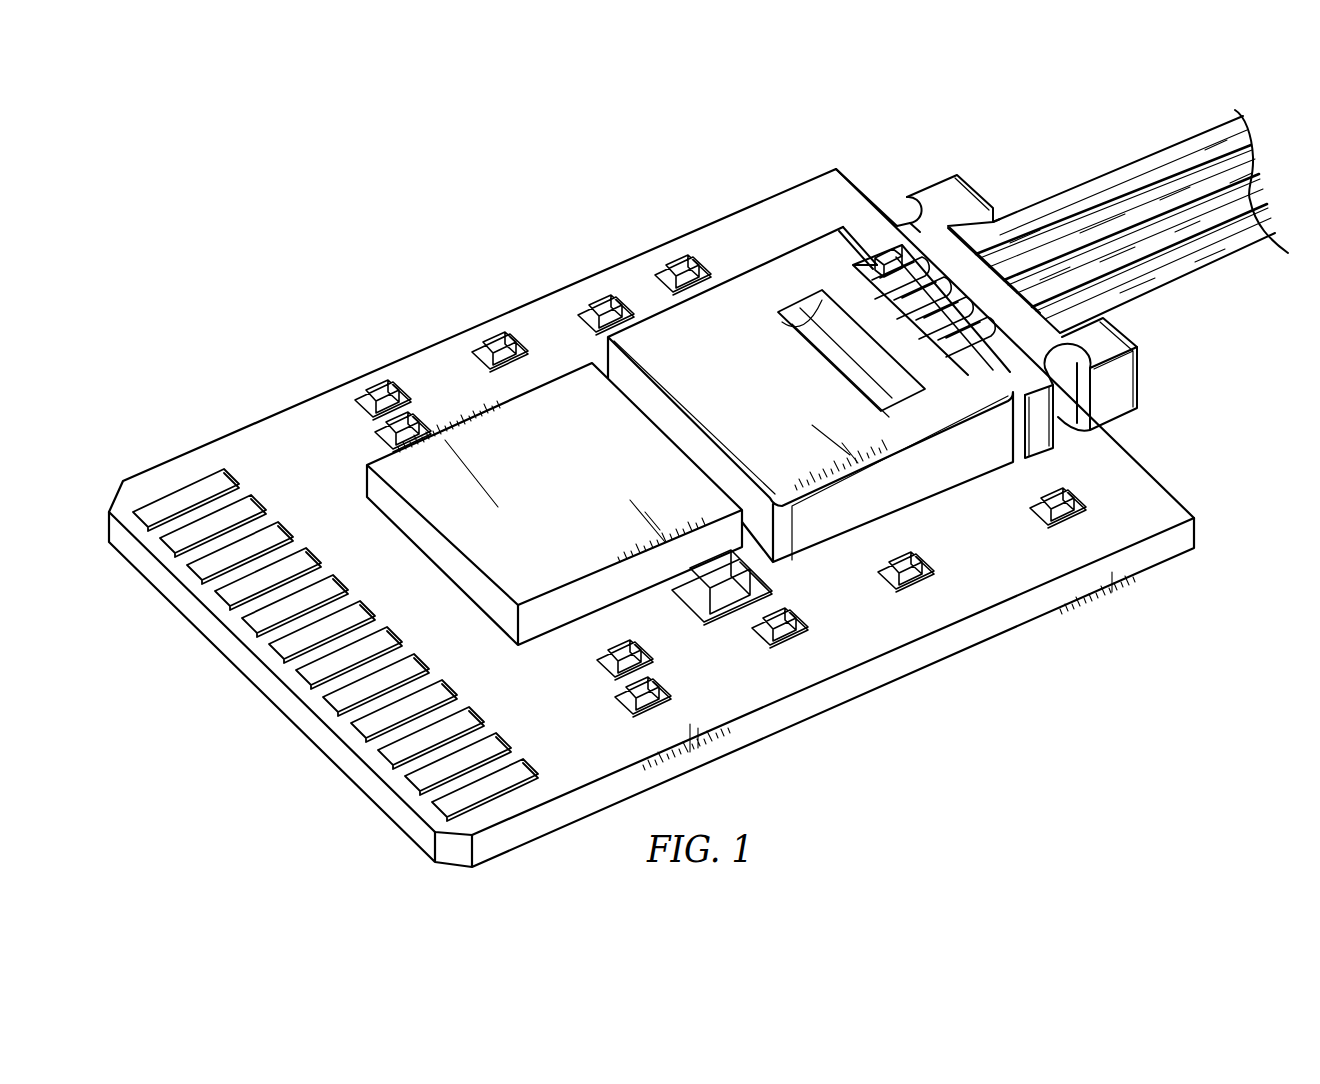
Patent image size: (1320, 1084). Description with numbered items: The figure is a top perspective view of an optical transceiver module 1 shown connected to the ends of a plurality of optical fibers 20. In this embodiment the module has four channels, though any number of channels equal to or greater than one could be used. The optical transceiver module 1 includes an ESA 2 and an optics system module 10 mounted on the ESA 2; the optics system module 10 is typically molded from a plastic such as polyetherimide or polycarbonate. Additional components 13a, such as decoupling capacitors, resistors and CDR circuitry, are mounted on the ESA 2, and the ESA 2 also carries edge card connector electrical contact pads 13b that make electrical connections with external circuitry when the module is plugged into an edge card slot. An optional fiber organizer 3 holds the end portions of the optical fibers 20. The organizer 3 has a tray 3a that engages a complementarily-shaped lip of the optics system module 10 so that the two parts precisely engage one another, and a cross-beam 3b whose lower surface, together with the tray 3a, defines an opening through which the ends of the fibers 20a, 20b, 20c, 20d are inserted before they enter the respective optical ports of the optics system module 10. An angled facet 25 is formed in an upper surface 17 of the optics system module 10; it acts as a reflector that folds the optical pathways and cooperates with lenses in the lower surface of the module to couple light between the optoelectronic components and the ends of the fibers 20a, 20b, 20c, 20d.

The optical transceiver module 1 is at (596, 135).
The ESA 2 is at (925, 655).
The fiber organizer 3 is at (950, 195).
The tray 3a is at (891, 276).
The cross-beam 3b is at (905, 222).
The optics system module 10 is at (665, 330).
The additional components 13a is at (672, 262).
The edge card connector electrical contact pads 13b is at (228, 594).
The upper surface 17 is at (872, 440).
The optical fibers 20 is at (1205, 335).
The optical fiber 20a is at (1140, 285).
The optical fiber 20b is at (1165, 260).
The optical fiber 20c is at (1118, 225).
The optical fiber 20d is at (1140, 188).
The angled facet 25 is at (815, 318).